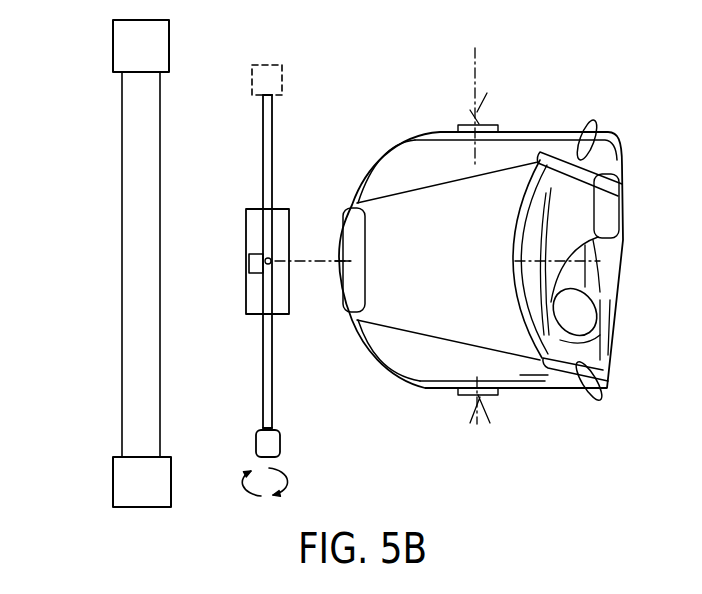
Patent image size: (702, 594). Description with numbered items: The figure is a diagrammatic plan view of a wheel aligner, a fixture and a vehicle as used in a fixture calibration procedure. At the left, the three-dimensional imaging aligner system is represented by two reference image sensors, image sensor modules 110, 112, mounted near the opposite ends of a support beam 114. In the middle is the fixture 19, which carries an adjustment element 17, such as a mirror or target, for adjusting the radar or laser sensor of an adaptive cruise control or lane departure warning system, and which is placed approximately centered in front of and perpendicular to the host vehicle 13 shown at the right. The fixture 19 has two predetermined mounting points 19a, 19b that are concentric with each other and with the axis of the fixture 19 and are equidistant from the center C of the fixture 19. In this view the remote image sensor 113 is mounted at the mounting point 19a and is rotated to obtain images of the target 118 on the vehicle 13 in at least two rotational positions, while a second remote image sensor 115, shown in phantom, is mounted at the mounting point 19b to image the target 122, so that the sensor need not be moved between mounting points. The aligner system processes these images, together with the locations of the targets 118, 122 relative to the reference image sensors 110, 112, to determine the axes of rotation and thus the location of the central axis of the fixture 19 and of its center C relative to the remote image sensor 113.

The image sensor module 110 is at (125, 482).
The image sensor module 112 is at (123, 44).
The support beam 114 is at (121, 152).
The second remote image sensor 115 is at (284, 82).
The fixture 19 is at (274, 125).
The predetermined mounting point 19a is at (264, 426).
The predetermined mounting point 19b is at (266, 99).
The adjustment element 17 is at (252, 264).
The center of fixture C is at (272, 260).
The remote image sensor 113 is at (282, 446).
The host vehicle 13 is at (527, 146).
The target 122 is at (478, 118).
The target 118 is at (474, 412).